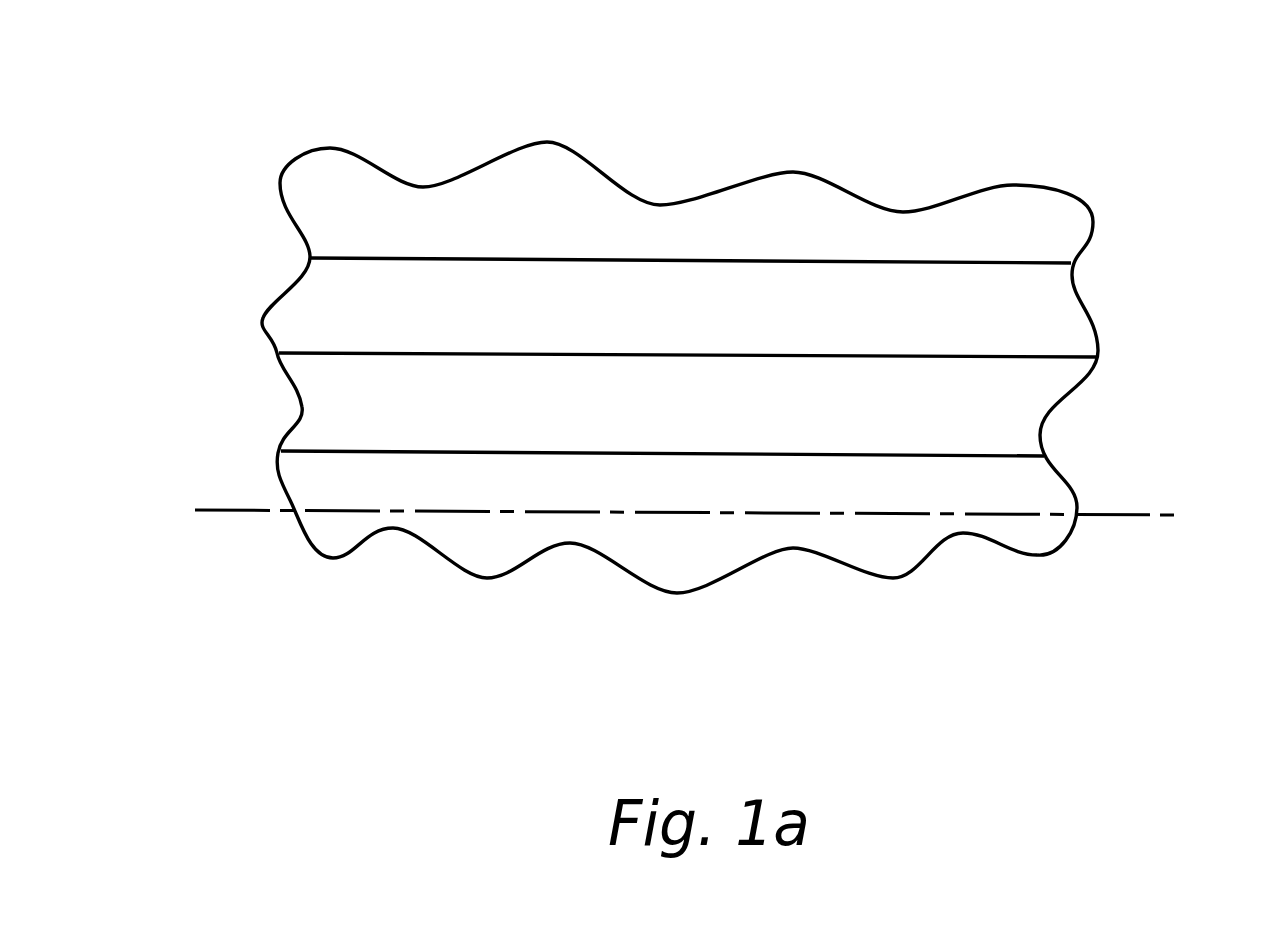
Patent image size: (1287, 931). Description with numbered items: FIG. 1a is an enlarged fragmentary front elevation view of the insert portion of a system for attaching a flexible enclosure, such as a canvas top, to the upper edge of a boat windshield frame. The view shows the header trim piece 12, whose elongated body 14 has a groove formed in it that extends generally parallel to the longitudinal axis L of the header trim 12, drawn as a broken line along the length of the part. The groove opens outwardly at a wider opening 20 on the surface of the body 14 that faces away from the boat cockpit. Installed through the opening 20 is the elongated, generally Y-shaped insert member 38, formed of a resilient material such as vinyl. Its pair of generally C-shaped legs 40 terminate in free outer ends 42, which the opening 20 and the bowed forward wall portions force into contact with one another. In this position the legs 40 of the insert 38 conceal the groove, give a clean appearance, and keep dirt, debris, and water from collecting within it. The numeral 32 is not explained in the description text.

The header trim piece 12 is at (1076, 160).
The elongated body 14 is at (1105, 216).
The opening 20 is at (216, 354).
The outer layer 32 is at (487, 188).
The insert member 38 is at (1090, 293).
The legs 40 is at (295, 298).
The free outer ends 42 is at (1030, 410).
The longitudinal axis L is at (1147, 515).